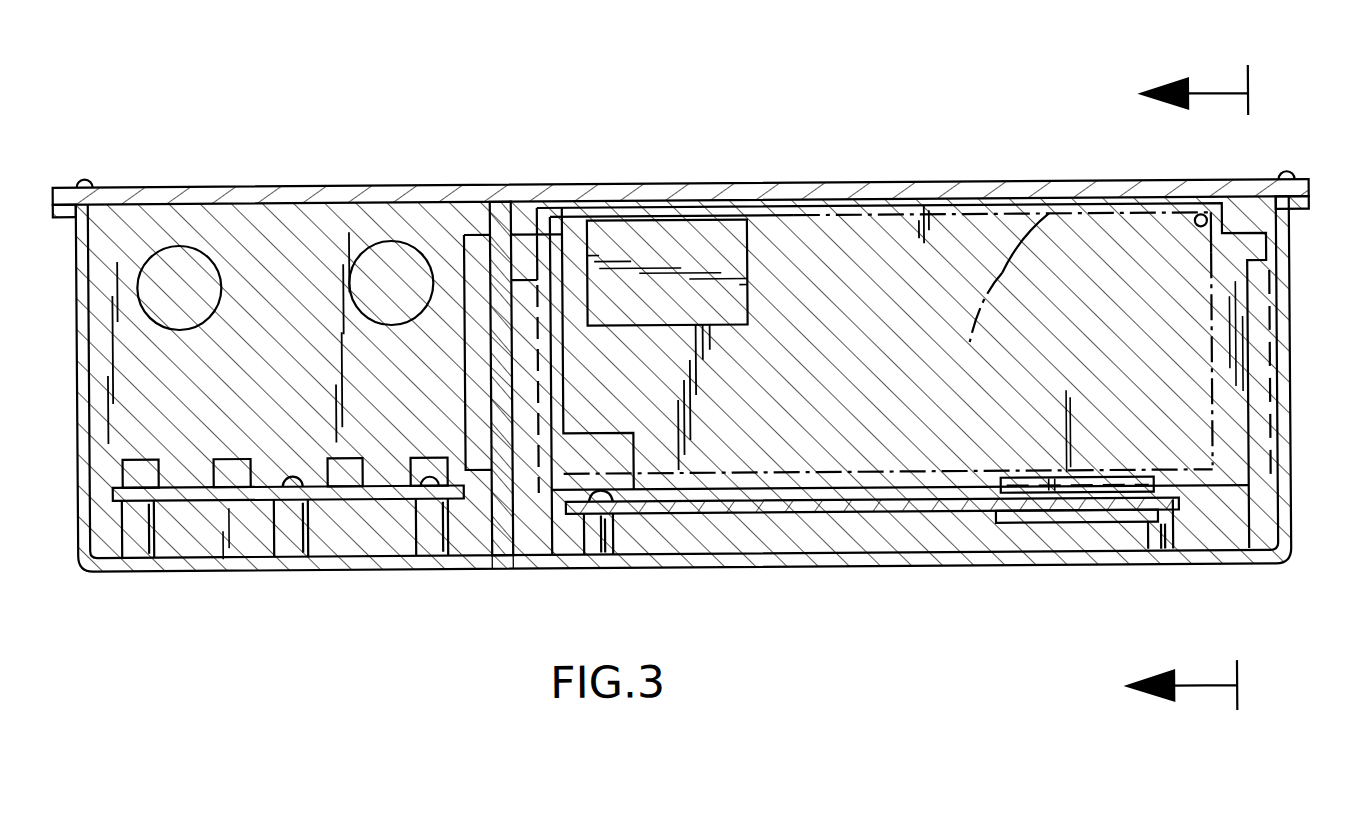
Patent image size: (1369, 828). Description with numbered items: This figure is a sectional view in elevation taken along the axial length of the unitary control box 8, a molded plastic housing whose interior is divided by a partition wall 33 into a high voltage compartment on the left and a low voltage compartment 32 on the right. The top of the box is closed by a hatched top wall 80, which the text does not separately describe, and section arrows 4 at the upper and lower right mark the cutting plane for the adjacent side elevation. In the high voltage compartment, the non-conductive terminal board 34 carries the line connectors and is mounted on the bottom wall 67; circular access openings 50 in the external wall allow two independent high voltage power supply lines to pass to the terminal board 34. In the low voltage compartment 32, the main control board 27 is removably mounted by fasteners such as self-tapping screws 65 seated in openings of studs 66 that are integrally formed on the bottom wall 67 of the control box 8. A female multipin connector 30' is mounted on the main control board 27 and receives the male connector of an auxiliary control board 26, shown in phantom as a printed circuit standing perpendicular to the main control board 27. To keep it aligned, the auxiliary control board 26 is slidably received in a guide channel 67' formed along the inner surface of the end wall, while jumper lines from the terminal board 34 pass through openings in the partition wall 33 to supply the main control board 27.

The unitary control box 8 is at (706, 180).
The lid 80 is at (877, 190).
The low voltage compartment 32 is at (523, 214).
The bottom wall 67 is at (857, 408).
The guide channel 67' is at (1293, 377).
The partition wall 33 is at (500, 519).
The access openings 50 is at (140, 313).
The terminal board 34 is at (384, 490).
The auxiliary control board 26 is at (974, 235).
The self-tapping screws 65 is at (600, 491).
The main control board 27 is at (806, 508).
The studs 66 is at (609, 555).
The female multipin connector 30' is at (1085, 466).
The section line FIG. 4 is at (1201, 388).